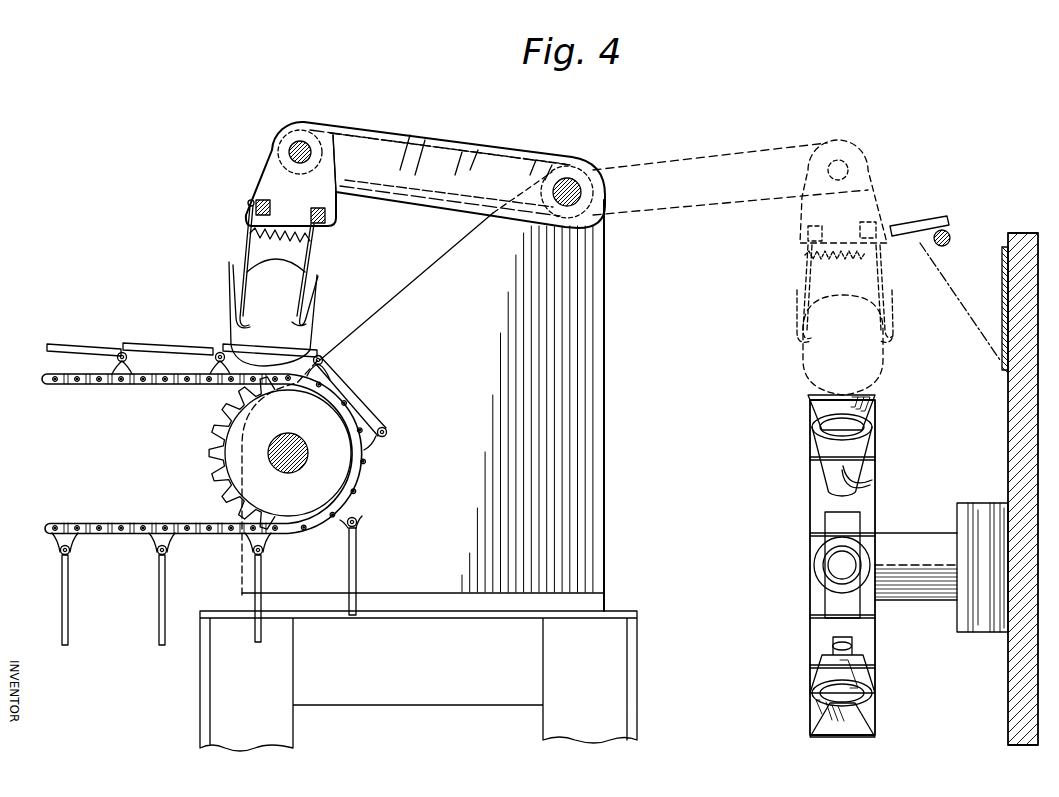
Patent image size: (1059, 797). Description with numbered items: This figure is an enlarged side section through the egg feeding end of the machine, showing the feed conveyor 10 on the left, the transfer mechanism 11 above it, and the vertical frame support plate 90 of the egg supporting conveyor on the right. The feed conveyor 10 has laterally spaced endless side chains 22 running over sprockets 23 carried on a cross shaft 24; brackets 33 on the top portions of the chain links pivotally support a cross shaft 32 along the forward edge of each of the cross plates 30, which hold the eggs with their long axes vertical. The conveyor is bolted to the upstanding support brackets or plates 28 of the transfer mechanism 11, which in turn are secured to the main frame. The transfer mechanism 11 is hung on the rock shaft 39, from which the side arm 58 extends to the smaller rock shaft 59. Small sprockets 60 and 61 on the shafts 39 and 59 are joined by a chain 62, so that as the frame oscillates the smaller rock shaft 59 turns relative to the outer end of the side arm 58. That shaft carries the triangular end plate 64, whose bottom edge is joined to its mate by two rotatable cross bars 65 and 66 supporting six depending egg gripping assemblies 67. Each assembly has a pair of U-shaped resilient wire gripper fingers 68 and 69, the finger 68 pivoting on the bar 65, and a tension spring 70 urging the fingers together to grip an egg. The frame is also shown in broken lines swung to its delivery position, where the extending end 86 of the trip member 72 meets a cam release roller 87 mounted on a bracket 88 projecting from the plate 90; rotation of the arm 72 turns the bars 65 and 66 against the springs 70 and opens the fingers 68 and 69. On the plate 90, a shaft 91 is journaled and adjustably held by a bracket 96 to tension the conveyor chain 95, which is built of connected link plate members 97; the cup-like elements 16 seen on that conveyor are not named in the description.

The feed conveyor 10 is at (86, 333).
The transfer mechanism 11 is at (283, 108).
The bottle holder cup 16 is at (874, 422).
The side chains 22 is at (82, 384).
The sprockets 23 is at (214, 462).
The cross shaft 24 is at (288, 472).
The support brackets or plates 28 is at (604, 453).
The cross plates 30 is at (212, 327).
The cross shaft 32 is at (126, 343).
The brackets 33 is at (212, 382).
The rock shaft 39 is at (585, 214).
The side arm 58 is at (424, 198).
The smaller rock shaft 59 is at (278, 144).
The sprocket 60 is at (578, 165).
The sprocket 61 is at (308, 128).
The chain 62 is at (450, 143).
The triangular end plate 64 is at (336, 204).
The cross bar 65 is at (250, 200).
The cross bar 66 is at (328, 220).
The egg gripping assemblies 67 is at (240, 252).
The gripper finger 68 is at (248, 234).
The gripper finger 69 is at (312, 258).
The tension spring 70 is at (272, 258).
The trip member 72 is at (925, 218).
The extending end 86 is at (947, 230).
The cam release roller 87 is at (950, 234).
The bracket 88 is at (1005, 250).
The vertical frame support plate 90 is at (1008, 413).
The shaft 91 is at (908, 540).
The conveyor chain 95 is at (800, 522).
The bracket 96 is at (973, 506).
The link plate members 97 is at (810, 631).